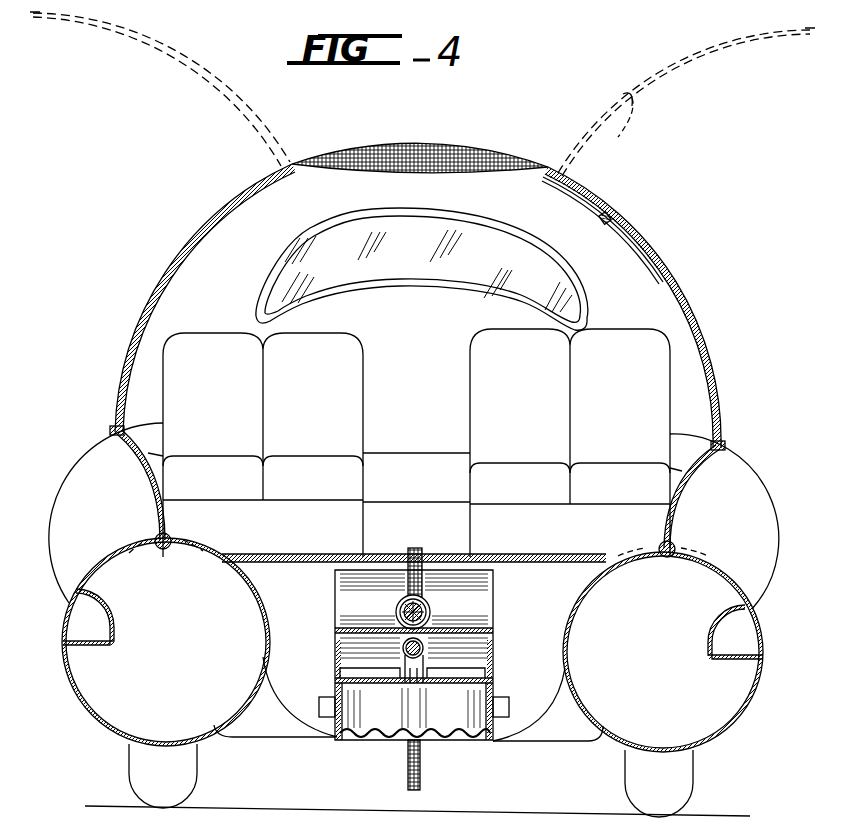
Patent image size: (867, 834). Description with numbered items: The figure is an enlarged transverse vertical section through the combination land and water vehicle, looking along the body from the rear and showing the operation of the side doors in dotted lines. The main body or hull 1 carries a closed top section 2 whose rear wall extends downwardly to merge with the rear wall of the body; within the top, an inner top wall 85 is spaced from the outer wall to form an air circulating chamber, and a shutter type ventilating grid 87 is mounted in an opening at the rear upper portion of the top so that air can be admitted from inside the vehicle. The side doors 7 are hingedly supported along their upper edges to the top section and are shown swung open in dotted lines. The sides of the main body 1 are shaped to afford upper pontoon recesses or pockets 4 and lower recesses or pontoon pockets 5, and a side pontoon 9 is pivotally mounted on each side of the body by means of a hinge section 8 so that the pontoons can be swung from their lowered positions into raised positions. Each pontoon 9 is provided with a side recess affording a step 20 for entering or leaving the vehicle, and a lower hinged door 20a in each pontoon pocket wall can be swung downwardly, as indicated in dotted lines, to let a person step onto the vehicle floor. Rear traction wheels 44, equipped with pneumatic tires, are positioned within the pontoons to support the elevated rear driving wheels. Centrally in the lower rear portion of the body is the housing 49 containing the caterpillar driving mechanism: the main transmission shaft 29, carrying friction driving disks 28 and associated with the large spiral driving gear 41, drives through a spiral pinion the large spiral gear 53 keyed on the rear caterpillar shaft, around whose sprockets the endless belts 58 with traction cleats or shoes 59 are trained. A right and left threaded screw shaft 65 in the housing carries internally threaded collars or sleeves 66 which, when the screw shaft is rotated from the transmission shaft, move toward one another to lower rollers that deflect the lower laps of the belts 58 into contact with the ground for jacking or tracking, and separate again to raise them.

The main body or hull 1 is at (268, 730).
The top section 2 is at (483, 153).
The upper pontoon recesses or pockets 4 is at (113, 833).
The lower recesses or pontoon pockets 5 is at (623, 557).
The side doors 7 is at (585, 190).
The hinge section 8 is at (668, 542).
The side pontoon 9 is at (742, 712).
The step 20 is at (742, 655).
The lower hinged door 20a is at (676, 510).
The friction driving disks or wheels 28 is at (399, 612).
The main transmission shaft 29 is at (431, 613).
The large spiral driving gear 41 is at (418, 555).
The rear traction wheels 44 is at (148, 765).
The housing 49 is at (340, 636).
The large spiral gear 53 is at (418, 752).
The endless belts 58 is at (386, 745).
The traction cleats or shoes 59 is at (458, 673).
The right and left threaded screw shaft 65 is at (420, 651).
The internally threaded collars or sleeves 66 is at (420, 651).
The inner top wall 85 is at (460, 178).
The shutter type ventilating grid 87 is at (388, 156).